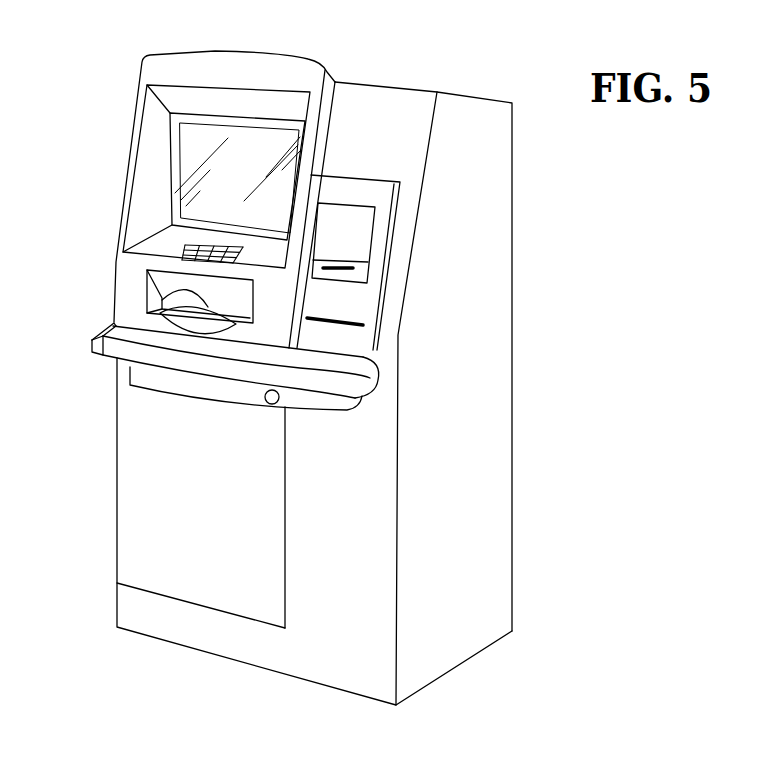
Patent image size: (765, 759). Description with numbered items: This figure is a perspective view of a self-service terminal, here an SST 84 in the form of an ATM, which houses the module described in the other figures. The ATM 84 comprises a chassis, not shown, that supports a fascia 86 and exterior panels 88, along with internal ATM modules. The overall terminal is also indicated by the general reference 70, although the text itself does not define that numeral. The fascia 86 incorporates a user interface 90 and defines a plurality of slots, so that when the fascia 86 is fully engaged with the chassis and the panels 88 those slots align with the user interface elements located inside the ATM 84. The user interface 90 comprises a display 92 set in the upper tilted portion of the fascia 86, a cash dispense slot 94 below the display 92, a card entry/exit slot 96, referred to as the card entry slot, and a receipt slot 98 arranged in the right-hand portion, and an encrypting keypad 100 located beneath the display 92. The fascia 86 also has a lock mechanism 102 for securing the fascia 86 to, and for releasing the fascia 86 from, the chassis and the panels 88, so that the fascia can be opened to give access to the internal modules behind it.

The self-service terminal 70 is at (116, 59).
The SST 84 is at (543, 472).
The fascia 86 is at (307, 60).
The exterior panels 88 is at (494, 212).
The user interface 90 is at (100, 210).
The display 92 is at (192, 140).
The cash dispense slot 94 is at (167, 287).
The card entry/exit slot 96 is at (345, 279).
The receipt slot 98 is at (340, 326).
The encrypting keypad 100 is at (228, 253).
The lock mechanism 102 is at (272, 405).